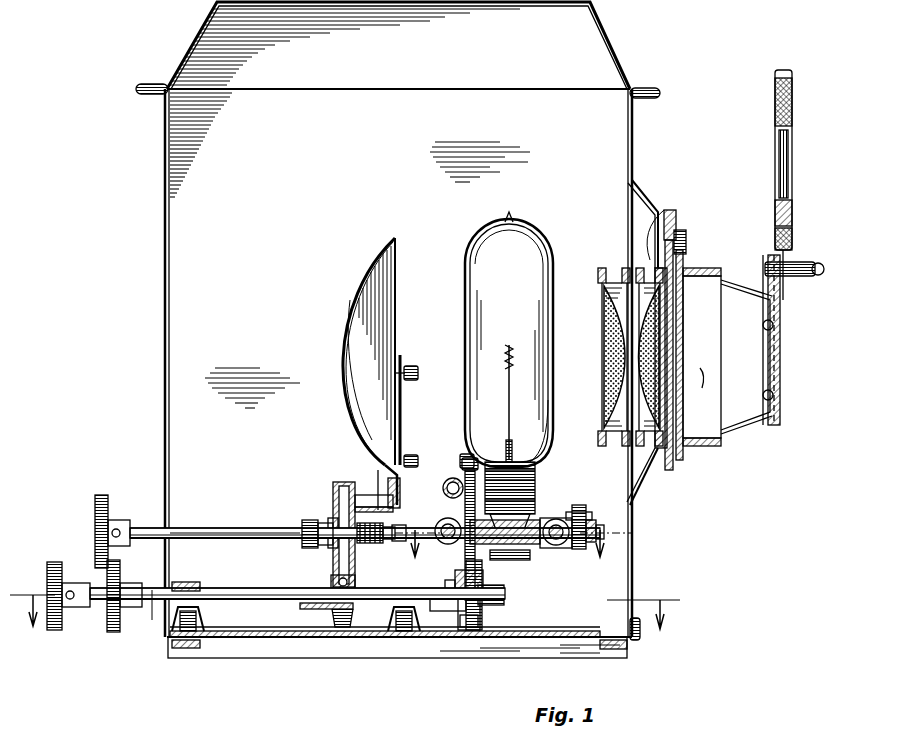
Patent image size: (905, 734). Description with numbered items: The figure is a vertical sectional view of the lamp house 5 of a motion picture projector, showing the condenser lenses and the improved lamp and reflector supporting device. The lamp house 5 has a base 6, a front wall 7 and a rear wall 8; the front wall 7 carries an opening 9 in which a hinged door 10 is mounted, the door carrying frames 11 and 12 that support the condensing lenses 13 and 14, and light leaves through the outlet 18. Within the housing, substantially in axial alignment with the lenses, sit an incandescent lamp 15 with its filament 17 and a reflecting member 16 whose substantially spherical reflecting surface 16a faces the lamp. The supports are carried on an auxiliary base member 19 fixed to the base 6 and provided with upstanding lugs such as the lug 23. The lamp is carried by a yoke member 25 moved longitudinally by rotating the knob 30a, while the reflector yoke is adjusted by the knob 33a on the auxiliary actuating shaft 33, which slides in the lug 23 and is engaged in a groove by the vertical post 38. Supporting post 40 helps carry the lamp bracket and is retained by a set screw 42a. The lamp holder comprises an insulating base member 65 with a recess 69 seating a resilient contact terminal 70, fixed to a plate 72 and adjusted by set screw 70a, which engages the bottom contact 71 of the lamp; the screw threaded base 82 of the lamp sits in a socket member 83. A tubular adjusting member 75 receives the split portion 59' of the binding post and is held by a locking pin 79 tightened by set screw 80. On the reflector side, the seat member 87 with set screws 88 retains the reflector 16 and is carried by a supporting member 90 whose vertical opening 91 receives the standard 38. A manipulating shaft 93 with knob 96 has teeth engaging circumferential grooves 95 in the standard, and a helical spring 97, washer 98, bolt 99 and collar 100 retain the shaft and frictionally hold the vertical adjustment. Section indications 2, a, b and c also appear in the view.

The lamp house 5 is at (183, 288).
The base 6 is at (618, 650).
The front wall 7 is at (631, 148).
The rear wall 8 is at (167, 172).
The opening 9 is at (652, 266).
The hinged door 10 is at (690, 270).
The frame 11 is at (600, 268).
The frame 12 is at (648, 480).
The condensing lens 13 is at (612, 365).
The condensing lens 14 is at (668, 322).
The lamp 15 is at (535, 242).
The reflecting member 16 is at (384, 240).
The reflecting surface 16a is at (372, 318).
The filament 17 is at (515, 345).
The outlet 18 is at (750, 404).
The auxiliary base member 19 is at (265, 631).
The lug 23 is at (196, 582).
The yoke member 25 is at (472, 598).
The knob 30a is at (116, 632).
The auxiliary actuating shaft 33 is at (372, 612).
The knob 33a is at (55, 562).
The vertical post 38 is at (357, 580).
The supporting post 40 is at (468, 596).
The set screw 42a is at (488, 596).
The split 59' is at (605, 552).
The base member 65 is at (520, 562).
The recess 69 is at (446, 492).
The resilient contact terminal 70 is at (560, 546).
The set screw 70a is at (482, 604).
The bottom contact 71 is at (535, 494).
The plate 72 is at (505, 560).
The adjusting member 75 is at (548, 542).
The locking pin 79 is at (585, 518).
The set screw 80 is at (578, 504).
The screw threaded base 82 is at (547, 432).
The socket member 83 is at (462, 456).
The reflector seat member 87 is at (378, 470).
The set screw 88 is at (418, 370).
The supporting member 90 is at (335, 500).
The vertical opening 91 is at (346, 484).
The manipulating shaft 93 is at (282, 528).
The circumferential grooves 95 is at (325, 548).
The knob 96 is at (108, 505).
The helical spring 97 is at (398, 556).
The washer 98 is at (400, 518).
The bolt 99 is at (388, 545).
The collar 100 is at (310, 520).
The section line 2 is at (513, 533).
The collar a is at (137, 583).
The pin b is at (152, 605).
The shaft c is at (365, 518).